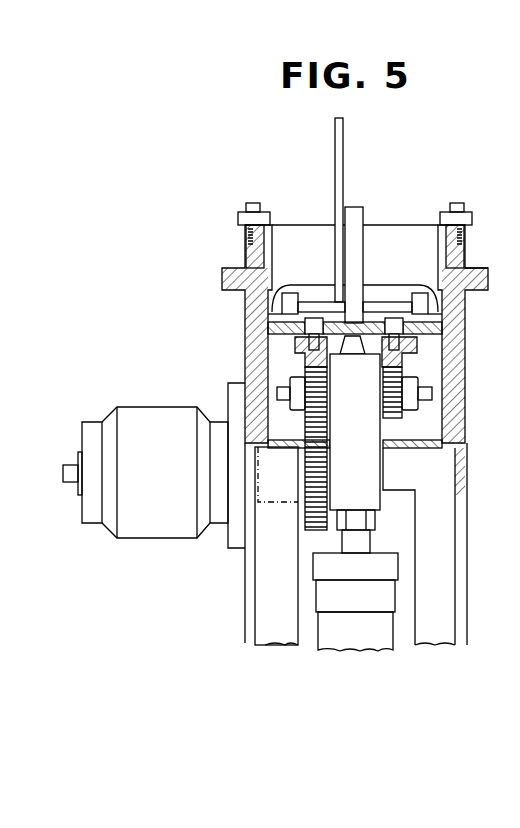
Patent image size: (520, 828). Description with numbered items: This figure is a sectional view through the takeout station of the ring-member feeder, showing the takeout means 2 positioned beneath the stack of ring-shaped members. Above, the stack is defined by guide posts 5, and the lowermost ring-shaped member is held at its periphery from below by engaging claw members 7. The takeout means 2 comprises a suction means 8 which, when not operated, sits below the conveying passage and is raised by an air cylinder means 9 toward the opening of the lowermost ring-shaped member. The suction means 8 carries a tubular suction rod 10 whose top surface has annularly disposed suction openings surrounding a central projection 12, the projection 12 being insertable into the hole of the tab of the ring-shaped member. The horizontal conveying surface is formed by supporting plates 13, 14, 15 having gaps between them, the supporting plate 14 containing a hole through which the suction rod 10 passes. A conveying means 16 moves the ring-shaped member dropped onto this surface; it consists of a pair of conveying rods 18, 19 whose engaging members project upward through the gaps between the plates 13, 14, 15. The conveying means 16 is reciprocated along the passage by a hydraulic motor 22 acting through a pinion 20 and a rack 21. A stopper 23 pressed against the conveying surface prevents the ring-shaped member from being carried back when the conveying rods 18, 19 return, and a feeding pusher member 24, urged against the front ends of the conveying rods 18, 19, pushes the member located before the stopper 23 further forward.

The takeout means 2 is at (410, 600).
The guide post 5 is at (336, 142).
The engaging claw member 7 is at (262, 210).
The suction means 8 is at (343, 498).
The air cylinder means 9 is at (360, 626).
The tubular suction rod 10 is at (380, 472).
The projection 12 is at (463, 340).
The supporting plate 13 is at (246, 326).
The supporting plate 14 is at (378, 300).
The supporting plate 15 is at (468, 304).
The conveying means 16 is at (292, 350).
The conveying rod 18 is at (292, 372).
The conveying rod 19 is at (406, 372).
The pinion 20 is at (232, 527).
The rack 21 is at (290, 397).
The hydraulic motor 22 is at (143, 527).
The stopper 23 is at (331, 300).
The feeding pusher member 24 is at (310, 318).